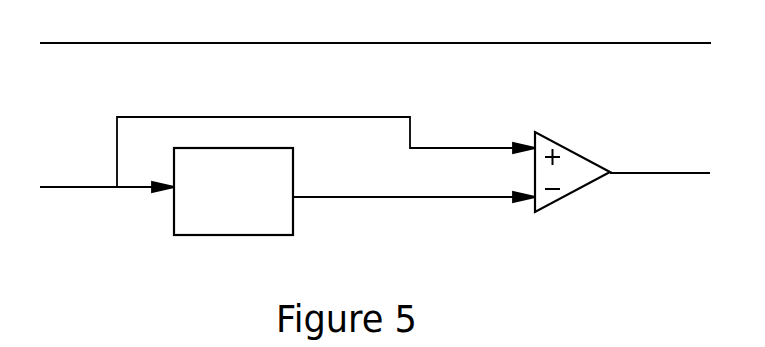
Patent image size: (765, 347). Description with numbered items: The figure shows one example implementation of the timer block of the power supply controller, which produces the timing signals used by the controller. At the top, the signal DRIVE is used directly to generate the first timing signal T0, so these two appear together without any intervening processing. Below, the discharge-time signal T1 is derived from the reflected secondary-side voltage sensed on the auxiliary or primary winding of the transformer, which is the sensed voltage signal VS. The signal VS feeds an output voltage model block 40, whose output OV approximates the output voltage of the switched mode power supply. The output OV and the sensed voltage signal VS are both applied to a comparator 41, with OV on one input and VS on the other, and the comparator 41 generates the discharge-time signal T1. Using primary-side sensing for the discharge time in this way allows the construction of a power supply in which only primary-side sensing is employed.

The output voltage model (OVM) block 40 is at (233, 212).
The comparator 41 is at (572, 184).
The sensed voltage signal VS is at (287, 154).
The output voltage model output OV is at (414, 181).
The timing signal T0 is at (655, 24).
The discharge-time signal T1 is at (660, 154).
The DRIVE signal DRIVE is at (375, 24).